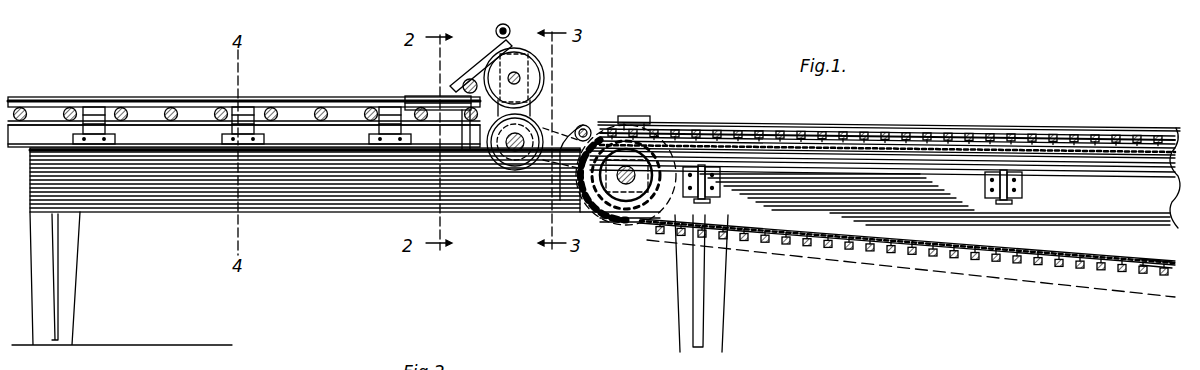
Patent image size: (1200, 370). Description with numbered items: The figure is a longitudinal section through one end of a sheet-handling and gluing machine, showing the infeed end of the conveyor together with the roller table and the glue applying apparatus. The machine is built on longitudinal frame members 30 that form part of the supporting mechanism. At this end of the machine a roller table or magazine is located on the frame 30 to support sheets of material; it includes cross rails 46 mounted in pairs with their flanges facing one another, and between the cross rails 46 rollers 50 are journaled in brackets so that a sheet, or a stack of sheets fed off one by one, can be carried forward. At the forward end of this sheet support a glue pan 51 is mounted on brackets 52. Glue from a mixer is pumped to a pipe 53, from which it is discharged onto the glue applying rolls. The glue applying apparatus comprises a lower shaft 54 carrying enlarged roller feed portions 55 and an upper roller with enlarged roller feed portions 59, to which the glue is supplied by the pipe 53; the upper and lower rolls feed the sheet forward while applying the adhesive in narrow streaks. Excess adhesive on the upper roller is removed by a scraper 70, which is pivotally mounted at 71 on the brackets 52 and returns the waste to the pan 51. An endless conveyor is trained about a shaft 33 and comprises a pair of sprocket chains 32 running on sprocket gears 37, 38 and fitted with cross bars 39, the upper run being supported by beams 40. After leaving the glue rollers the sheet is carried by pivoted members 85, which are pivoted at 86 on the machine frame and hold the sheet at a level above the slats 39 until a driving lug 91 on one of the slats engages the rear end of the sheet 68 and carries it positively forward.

The longitudinal frame members 30 is at (352, 212).
The rollers 50 is at (126, 121).
The cross rails 46 is at (258, 126).
The glue pan 51 is at (428, 97).
The brackets 52 is at (466, 150).
The roller feed portions of the upper roller 59 is at (545, 74).
The scraper 70 is at (492, 58).
The pipe 53 is at (496, 30).
The pivot 71 is at (464, 80).
The lower shaft 54 is at (516, 152).
The roller feed portions of the lower shaft 55 is at (498, 162).
The shaft 33 is at (626, 186).
The sprocket gear 38 is at (641, 197).
The pivot 86 is at (575, 130).
The pivoted members 85 is at (680, 122).
The lug 91 is at (638, 116).
The cross bars 39 is at (1052, 134).
The sheet 68 is at (940, 128).
The sprocket chains 32 is at (1150, 259).
The beams 40 is at (1146, 157).
The sprocket gear 37 is at (1012, 202).